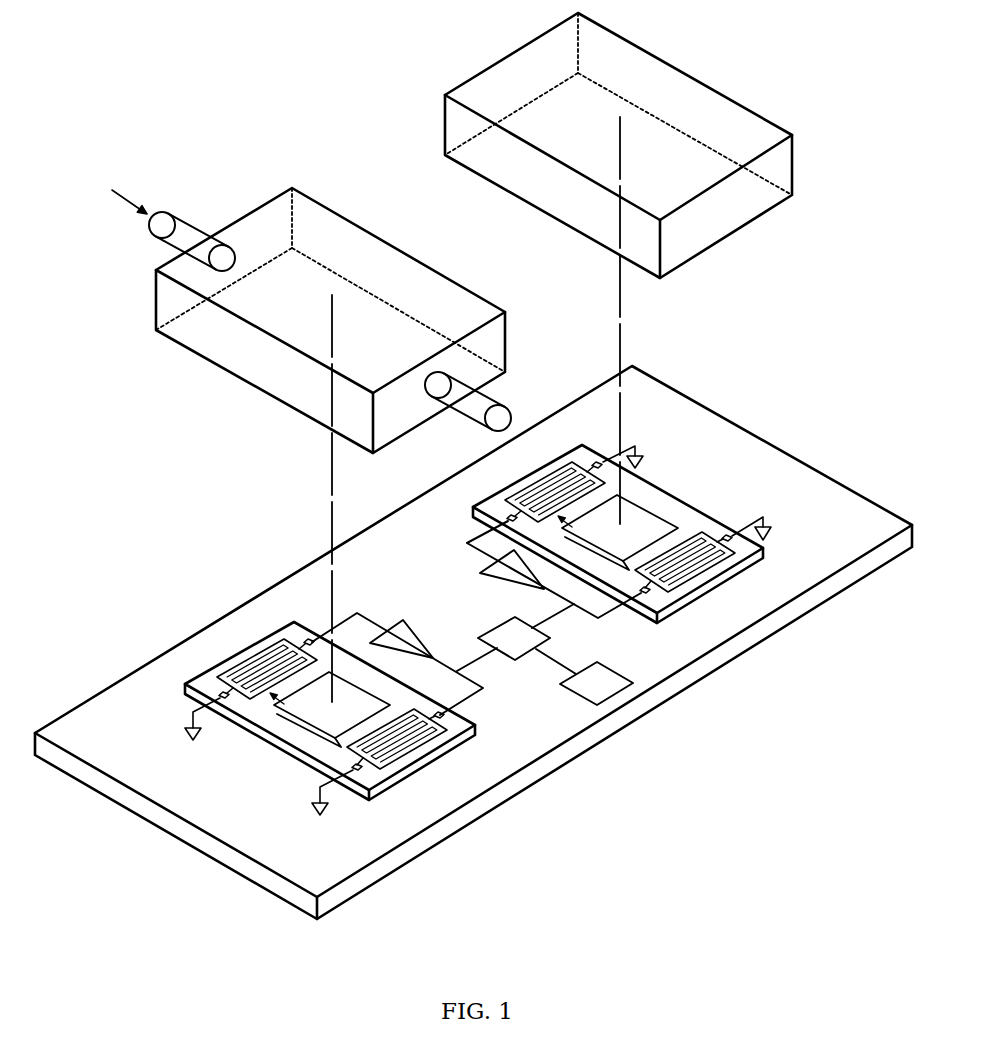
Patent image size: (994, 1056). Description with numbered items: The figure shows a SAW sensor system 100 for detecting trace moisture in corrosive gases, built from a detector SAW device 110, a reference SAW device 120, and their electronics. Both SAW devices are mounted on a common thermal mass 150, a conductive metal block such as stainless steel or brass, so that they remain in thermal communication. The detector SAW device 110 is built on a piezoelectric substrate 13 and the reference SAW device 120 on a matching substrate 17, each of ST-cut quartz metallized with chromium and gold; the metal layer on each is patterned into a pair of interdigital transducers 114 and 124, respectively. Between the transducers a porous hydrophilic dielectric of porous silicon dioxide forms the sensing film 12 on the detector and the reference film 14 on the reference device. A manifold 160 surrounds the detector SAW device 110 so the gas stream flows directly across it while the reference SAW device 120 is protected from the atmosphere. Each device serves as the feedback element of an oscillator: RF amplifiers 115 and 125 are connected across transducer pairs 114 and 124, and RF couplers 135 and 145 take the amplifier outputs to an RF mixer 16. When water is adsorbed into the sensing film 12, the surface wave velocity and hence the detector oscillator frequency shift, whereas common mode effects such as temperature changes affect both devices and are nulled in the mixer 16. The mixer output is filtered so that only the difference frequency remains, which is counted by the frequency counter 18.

The SAW sensor system 100 is at (473, 466).
The detector SAW device 110 is at (345, 739).
The reference SAW device 120 is at (635, 560).
The thermal mass 150 is at (106, 743).
The manifold 160 is at (527, 204).
The sensing film 12 is at (330, 709).
The reference film 14 is at (626, 538).
The substrate 13 is at (330, 711).
The substrate 17 is at (675, 497).
The interdigital transducers 114 is at (357, 693).
The interdigital transducers 124 is at (557, 490).
The RF amplifier 115 is at (405, 638).
The RF amplifier 125 is at (510, 572).
The RF coupler 135 is at (453, 667).
The RF coupler 145 is at (567, 608).
The RF mixer 16 is at (504, 648).
The frequency counter 18 is at (586, 694).